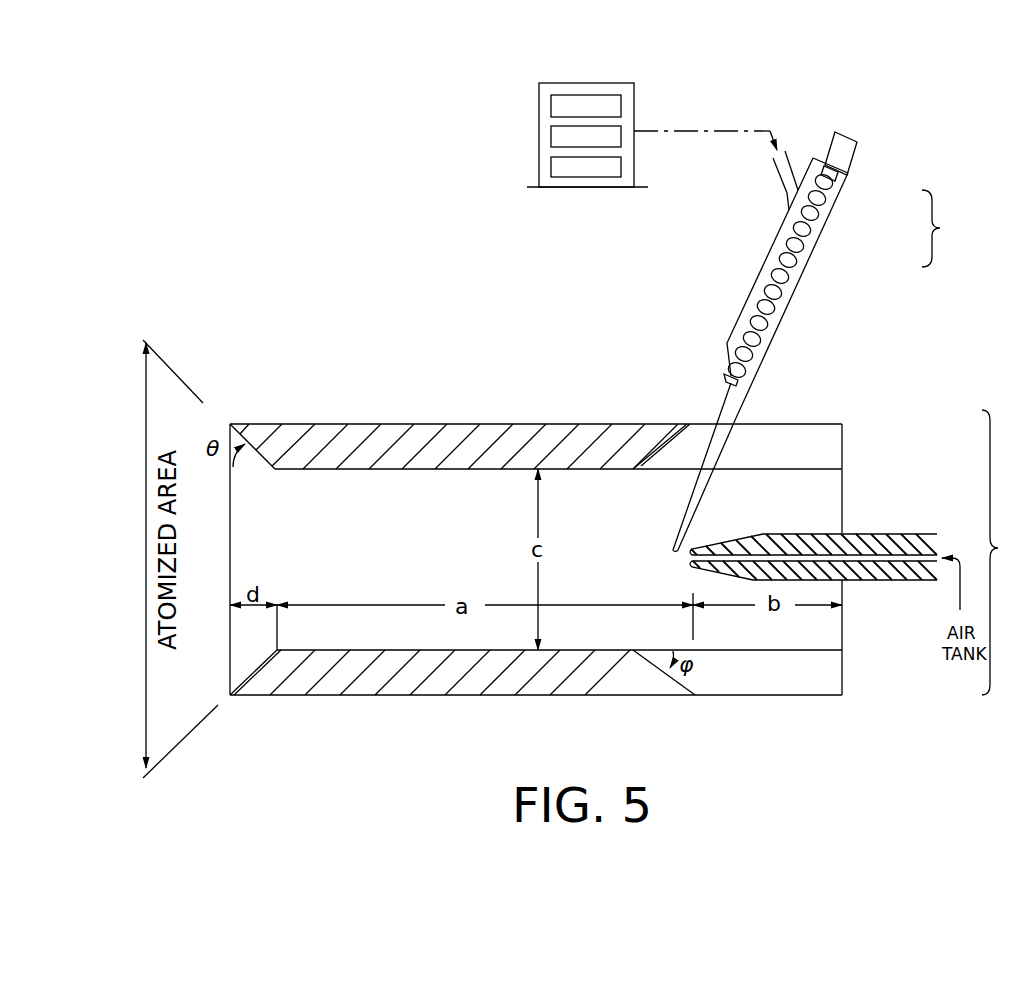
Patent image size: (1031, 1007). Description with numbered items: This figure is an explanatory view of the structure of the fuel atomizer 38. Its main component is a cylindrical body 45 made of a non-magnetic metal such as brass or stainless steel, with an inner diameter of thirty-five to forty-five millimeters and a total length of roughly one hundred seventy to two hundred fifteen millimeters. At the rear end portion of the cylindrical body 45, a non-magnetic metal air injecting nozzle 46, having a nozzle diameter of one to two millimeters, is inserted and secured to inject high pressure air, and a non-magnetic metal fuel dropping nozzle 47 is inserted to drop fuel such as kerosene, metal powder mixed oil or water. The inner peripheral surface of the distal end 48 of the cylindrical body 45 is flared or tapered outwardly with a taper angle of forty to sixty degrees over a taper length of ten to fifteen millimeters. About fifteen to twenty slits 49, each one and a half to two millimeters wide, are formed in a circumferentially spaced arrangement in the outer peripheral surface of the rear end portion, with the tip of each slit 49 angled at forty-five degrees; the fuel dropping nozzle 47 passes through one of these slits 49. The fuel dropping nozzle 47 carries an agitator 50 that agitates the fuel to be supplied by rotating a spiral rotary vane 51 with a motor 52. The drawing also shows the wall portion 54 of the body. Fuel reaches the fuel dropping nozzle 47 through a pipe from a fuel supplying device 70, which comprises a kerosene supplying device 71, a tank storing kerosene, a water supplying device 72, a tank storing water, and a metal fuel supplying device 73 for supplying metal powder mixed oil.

The fuel atomizer 38 is at (1006, 552).
The cylindrical body 45 is at (450, 424).
The air injecting nozzle 46 is at (894, 534).
The fuel dropping nozzle 47 is at (777, 330).
The distal end 48 is at (277, 403).
The slit 49 is at (805, 433).
The agitator 50 is at (949, 228).
The spiral rotary vane 51 is at (805, 238).
The motor 52 is at (845, 158).
The chamber bottom wall 54 is at (780, 678).
The fuel supplying device 70 is at (578, 87).
The kerosene supplying device 71 is at (551, 106).
The water supplying device 72 is at (551, 137).
The metal fuel supplying device 73 is at (551, 167).